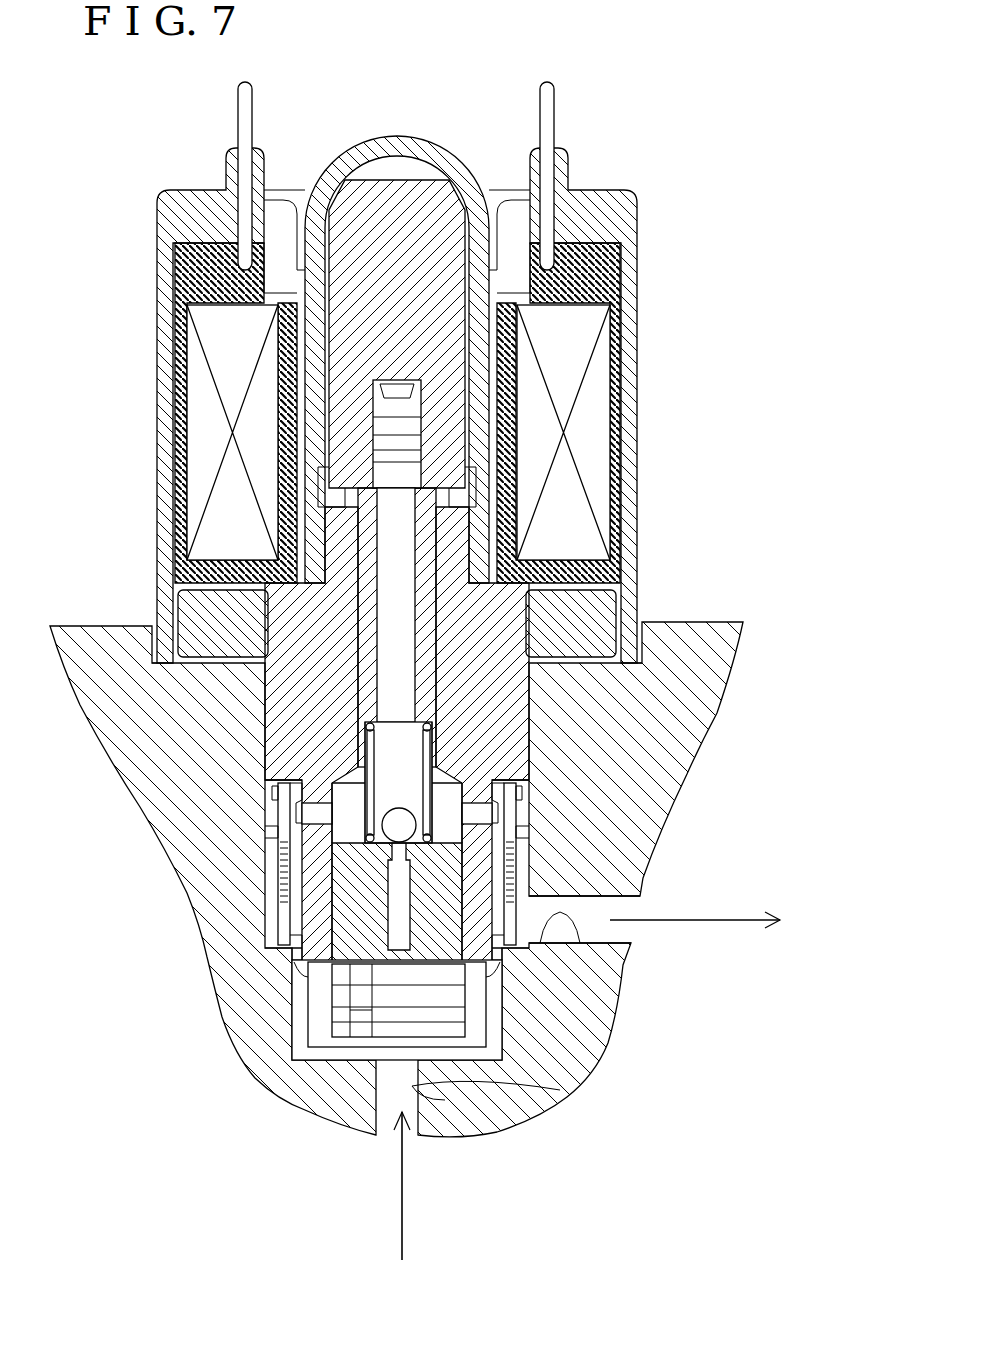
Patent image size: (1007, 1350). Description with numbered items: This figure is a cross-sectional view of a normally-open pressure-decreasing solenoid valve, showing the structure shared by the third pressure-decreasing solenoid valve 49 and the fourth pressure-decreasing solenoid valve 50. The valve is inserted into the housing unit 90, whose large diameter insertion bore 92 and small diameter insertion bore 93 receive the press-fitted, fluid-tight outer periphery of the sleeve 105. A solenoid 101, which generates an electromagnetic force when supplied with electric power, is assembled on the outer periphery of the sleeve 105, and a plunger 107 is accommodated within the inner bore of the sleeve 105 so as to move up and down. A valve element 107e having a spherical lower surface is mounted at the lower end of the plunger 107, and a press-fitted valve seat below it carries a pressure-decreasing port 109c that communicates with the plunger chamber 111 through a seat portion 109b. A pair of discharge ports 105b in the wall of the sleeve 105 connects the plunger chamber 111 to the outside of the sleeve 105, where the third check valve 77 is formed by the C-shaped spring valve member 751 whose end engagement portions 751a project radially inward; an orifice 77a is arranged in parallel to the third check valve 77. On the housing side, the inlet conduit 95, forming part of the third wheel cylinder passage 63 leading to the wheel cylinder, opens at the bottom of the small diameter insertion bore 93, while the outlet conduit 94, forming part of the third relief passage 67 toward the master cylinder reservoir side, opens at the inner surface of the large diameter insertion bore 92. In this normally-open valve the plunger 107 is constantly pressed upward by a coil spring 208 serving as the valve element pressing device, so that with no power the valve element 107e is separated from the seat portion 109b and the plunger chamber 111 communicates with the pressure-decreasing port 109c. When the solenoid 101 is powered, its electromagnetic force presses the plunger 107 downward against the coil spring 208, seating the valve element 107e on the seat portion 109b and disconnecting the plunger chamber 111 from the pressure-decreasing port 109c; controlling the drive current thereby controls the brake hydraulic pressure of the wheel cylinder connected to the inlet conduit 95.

The third pressure-decreasing solenoid valve 49 is at (665, 126).
The fourth pressure-decreasing solenoid valve 50 is at (454, 694).
The plunger 107 is at (440, 330).
The solenoid 101 is at (205, 367).
The housing unit 90 is at (152, 640).
The sleeve 105 is at (495, 732).
The discharge ports 105b is at (520, 793).
The coil spring 208 is at (268, 788).
The seat portion 109b is at (415, 765).
The pressure-decreasing port 109c is at (385, 962).
The third check valve 77 is at (252, 803).
The orifice 77a is at (285, 808).
The valve member 751 is at (283, 870).
The engagement portions 751a is at (280, 790).
The plunger chamber 111 is at (270, 833).
The valve element 107e is at (298, 890).
The large diameter insertion bore 92 is at (575, 920).
The third relief passage 67 is at (700, 922).
The outlet conduit 94 is at (520, 975).
The small diameter insertion bore 93 is at (505, 1010).
The inlet conduit 95 is at (440, 1082).
The third wheel cylinder passage 63 is at (400, 1193).